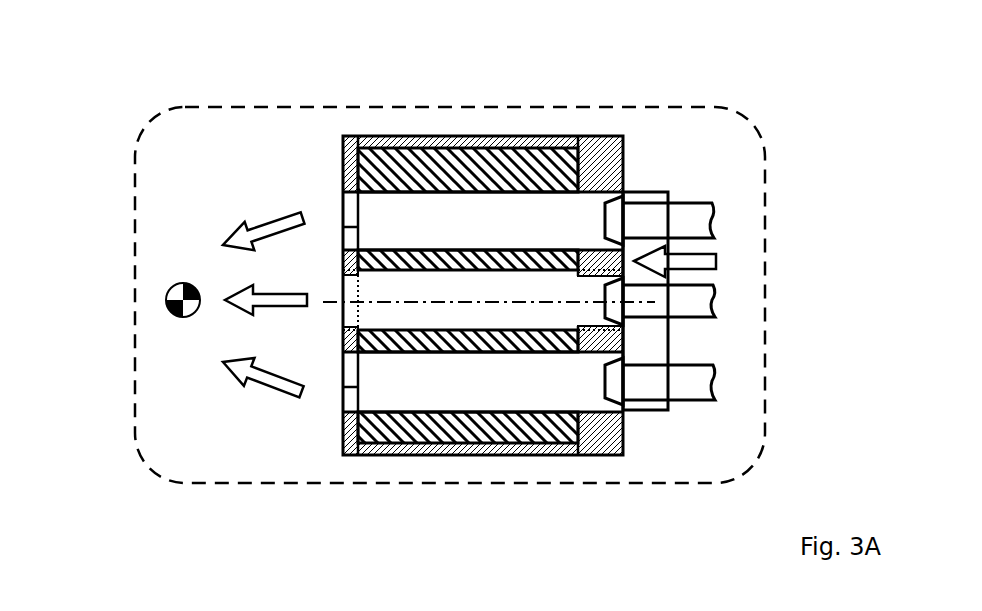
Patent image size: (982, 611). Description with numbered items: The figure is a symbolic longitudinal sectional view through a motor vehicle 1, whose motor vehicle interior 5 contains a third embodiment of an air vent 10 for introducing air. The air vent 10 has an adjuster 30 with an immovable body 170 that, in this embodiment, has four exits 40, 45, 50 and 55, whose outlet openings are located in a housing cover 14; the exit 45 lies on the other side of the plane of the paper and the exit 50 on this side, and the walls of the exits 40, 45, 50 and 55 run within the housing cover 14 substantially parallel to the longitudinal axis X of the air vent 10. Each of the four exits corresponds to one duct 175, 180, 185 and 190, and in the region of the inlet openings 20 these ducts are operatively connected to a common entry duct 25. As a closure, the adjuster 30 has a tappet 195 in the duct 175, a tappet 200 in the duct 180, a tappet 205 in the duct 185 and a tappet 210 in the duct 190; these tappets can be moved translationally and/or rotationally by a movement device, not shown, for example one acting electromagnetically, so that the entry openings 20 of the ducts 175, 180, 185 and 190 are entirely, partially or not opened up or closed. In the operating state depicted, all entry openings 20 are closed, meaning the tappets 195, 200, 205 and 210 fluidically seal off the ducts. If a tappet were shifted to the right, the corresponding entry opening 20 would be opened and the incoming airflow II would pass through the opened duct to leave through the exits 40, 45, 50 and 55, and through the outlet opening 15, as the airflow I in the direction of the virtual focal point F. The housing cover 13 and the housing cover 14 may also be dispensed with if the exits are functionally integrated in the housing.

The motor vehicle 1 is at (755, 452).
The motor vehicle interior 5 is at (173, 449).
The air vent 10 is at (364, 291).
The housing cover 13 is at (603, 440).
The housing cover 14 is at (343, 440).
The outlet opening 15 is at (343, 226).
The inlet opening 20 is at (723, 291).
The common entry duct 25 is at (655, 403).
The adjuster 30 is at (568, 165).
The exit 40 is at (343, 207).
The exit 45 is at (174, 351).
The exit 50 is at (343, 320).
The exit 55 is at (343, 387).
The immovable body 170 is at (517, 153).
The duct 175 is at (402, 212).
The duct 180 is at (465, 416).
The duct 185 is at (428, 312).
The duct 190 is at (497, 393).
The tappet 195 is at (713, 212).
The tappet 200 is at (770, 294).
The tappet 205 is at (716, 300).
The tappet 210 is at (700, 382).
The airflow I is at (226, 302).
The incoming airflow II is at (716, 258).
The virtual focal point F is at (172, 298).
The longitudinal axis X is at (338, 307).